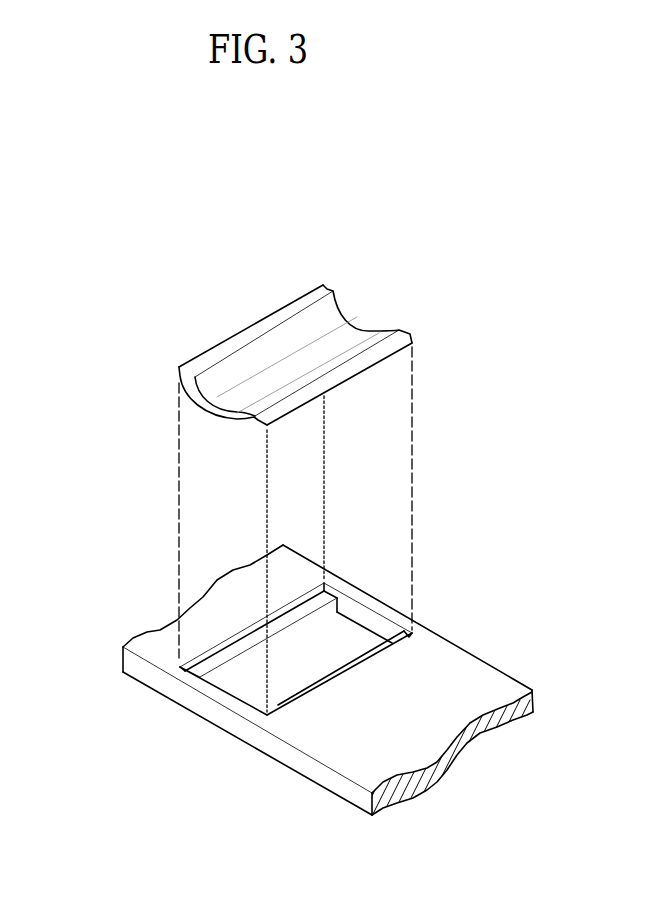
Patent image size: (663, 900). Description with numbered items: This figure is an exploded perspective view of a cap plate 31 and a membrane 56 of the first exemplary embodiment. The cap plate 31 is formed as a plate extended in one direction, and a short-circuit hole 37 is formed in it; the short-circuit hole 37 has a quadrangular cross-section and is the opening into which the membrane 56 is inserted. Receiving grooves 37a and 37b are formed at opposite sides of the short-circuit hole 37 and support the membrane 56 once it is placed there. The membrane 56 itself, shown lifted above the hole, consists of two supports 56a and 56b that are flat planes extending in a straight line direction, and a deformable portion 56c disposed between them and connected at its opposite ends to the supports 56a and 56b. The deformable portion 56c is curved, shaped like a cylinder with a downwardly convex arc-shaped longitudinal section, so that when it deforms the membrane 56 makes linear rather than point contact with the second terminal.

The cap plate 31 is at (458, 670).
The short-circuit hole 37 is at (234, 722).
The receiving groove 37a is at (208, 663).
The receiving groove 37b is at (293, 700).
The membrane 56 is at (319, 321).
The support 56a is at (400, 333).
The support 56b is at (315, 297).
The deformable portion 56c is at (277, 357).